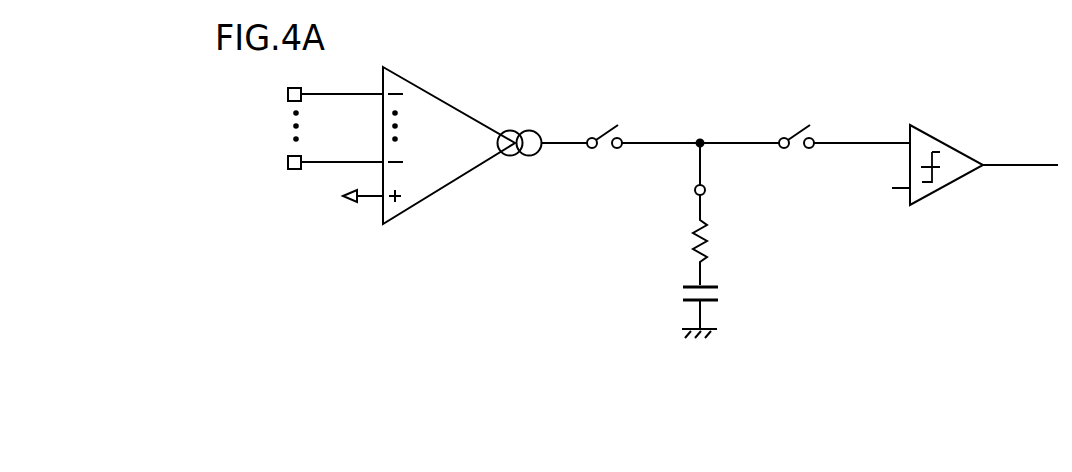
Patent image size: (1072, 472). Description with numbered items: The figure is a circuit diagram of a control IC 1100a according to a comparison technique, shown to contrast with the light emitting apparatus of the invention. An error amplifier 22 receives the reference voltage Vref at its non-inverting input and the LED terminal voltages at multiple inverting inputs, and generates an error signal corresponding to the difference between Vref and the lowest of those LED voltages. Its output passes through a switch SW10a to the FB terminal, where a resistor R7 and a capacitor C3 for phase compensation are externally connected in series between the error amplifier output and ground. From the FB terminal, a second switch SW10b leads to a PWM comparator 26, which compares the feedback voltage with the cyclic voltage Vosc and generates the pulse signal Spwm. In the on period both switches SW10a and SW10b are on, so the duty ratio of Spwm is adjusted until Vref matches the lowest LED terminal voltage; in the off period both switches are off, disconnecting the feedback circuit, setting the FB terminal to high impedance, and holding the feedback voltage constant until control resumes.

The control IC 1100a is at (674, 398).
The error amplifier 22 is at (453, 182).
The PWM comparator 26 is at (932, 136).
The switch SW10a is at (600, 150).
The switch SW10b is at (793, 150).
The FB terminal FB is at (704, 194).
The resistor R7 is at (688, 238).
The capacitor C3 is at (677, 293).